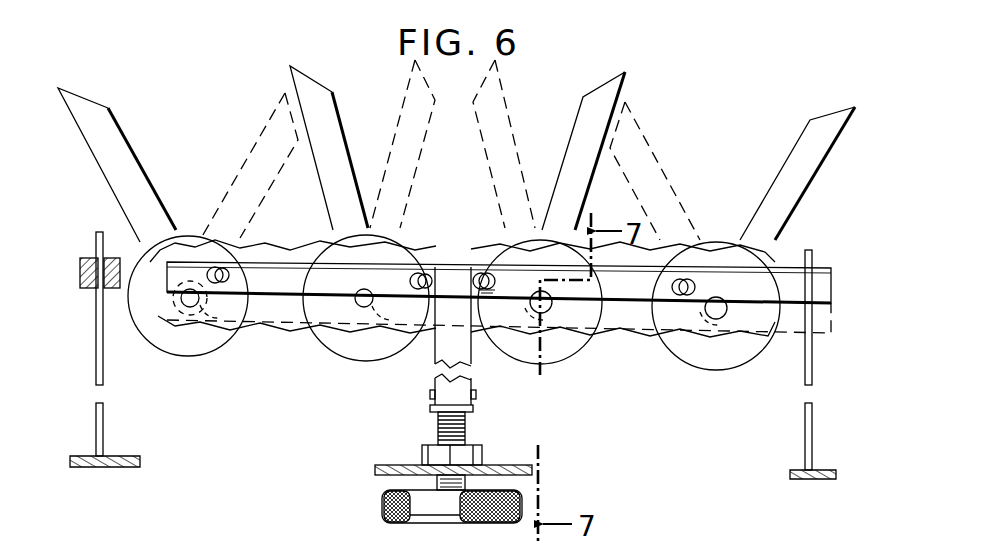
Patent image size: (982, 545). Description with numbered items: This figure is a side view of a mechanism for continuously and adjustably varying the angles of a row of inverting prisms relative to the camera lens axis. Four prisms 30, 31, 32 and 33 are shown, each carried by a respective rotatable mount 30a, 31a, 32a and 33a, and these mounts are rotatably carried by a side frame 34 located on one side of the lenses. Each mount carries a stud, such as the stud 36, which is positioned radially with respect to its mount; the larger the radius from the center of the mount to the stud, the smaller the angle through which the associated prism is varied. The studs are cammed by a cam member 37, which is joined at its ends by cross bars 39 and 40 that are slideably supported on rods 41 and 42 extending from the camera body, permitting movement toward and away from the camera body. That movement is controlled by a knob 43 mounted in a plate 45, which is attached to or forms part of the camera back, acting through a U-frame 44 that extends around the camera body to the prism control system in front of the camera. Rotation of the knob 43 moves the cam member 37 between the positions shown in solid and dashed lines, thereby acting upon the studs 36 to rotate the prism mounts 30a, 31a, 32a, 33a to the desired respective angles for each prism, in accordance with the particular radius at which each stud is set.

The prism 30 is at (232, 191).
The prism 31 is at (398, 141).
The prism 32 is at (575, 143).
The prism 33 is at (765, 214).
The rotatable mount 30a is at (182, 346).
The rotatable mount 31a is at (358, 348).
The rotatable mount 32a is at (578, 346).
The rotatable mount 33a is at (742, 352).
The side frame 34 is at (278, 312).
The stud 36 is at (487, 272).
The cam member 37 is at (282, 256).
The cross bar 39 is at (80, 272).
The cross bar 40 is at (836, 284).
The rod 41 is at (96, 366).
The rod 42 is at (813, 447).
The knob 43 is at (382, 505).
The U-frame 44 is at (471, 386).
The plate 45 is at (384, 464).